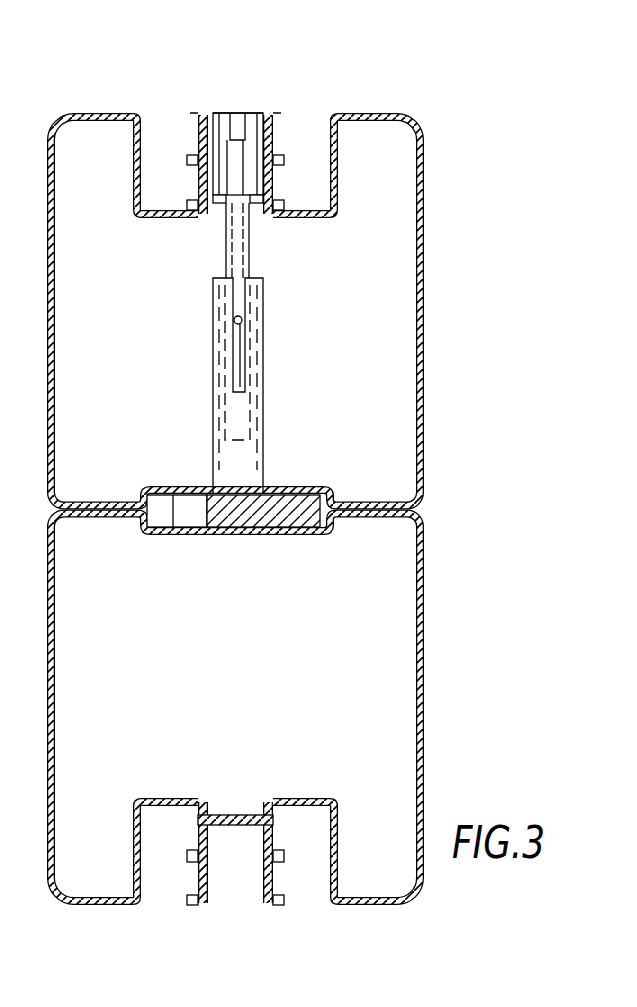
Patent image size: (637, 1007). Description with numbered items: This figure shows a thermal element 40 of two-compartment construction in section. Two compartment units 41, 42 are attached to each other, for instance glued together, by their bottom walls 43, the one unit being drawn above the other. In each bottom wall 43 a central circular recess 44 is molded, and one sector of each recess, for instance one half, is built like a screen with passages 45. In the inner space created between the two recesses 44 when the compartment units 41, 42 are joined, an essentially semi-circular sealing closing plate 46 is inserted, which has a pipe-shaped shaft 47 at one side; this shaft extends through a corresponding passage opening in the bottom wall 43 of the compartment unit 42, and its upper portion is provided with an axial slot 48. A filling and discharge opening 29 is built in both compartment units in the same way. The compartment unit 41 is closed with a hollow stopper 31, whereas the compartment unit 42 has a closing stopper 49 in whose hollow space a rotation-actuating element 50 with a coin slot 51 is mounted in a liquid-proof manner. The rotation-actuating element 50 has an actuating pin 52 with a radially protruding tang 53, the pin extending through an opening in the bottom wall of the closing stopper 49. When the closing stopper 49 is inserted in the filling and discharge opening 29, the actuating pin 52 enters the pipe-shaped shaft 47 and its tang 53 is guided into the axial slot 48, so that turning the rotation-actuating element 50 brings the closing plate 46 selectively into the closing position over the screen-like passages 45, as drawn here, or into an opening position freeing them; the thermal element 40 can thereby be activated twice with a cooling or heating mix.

The thermal element 40 is at (372, 108).
The compartment unit 41 is at (385, 656).
The compartment unit 42 is at (392, 322).
The bottom wall 43 is at (394, 522).
The central circular recess 44 is at (176, 533).
The passages 45 is at (312, 534).
The closing plate 46 is at (214, 536).
The pipe-shaped shaft 47 is at (248, 458).
The axial slot 48 is at (242, 378).
The closing stopper 49 is at (270, 120).
The rotation-actuating element 50 is at (230, 125).
The coin slot 51 is at (242, 125).
The actuating pin 52 is at (230, 243).
The tang 53 is at (236, 321).
The filling and discharge opening 29 is at (265, 212).
The hollow stopper 31 is at (220, 884).